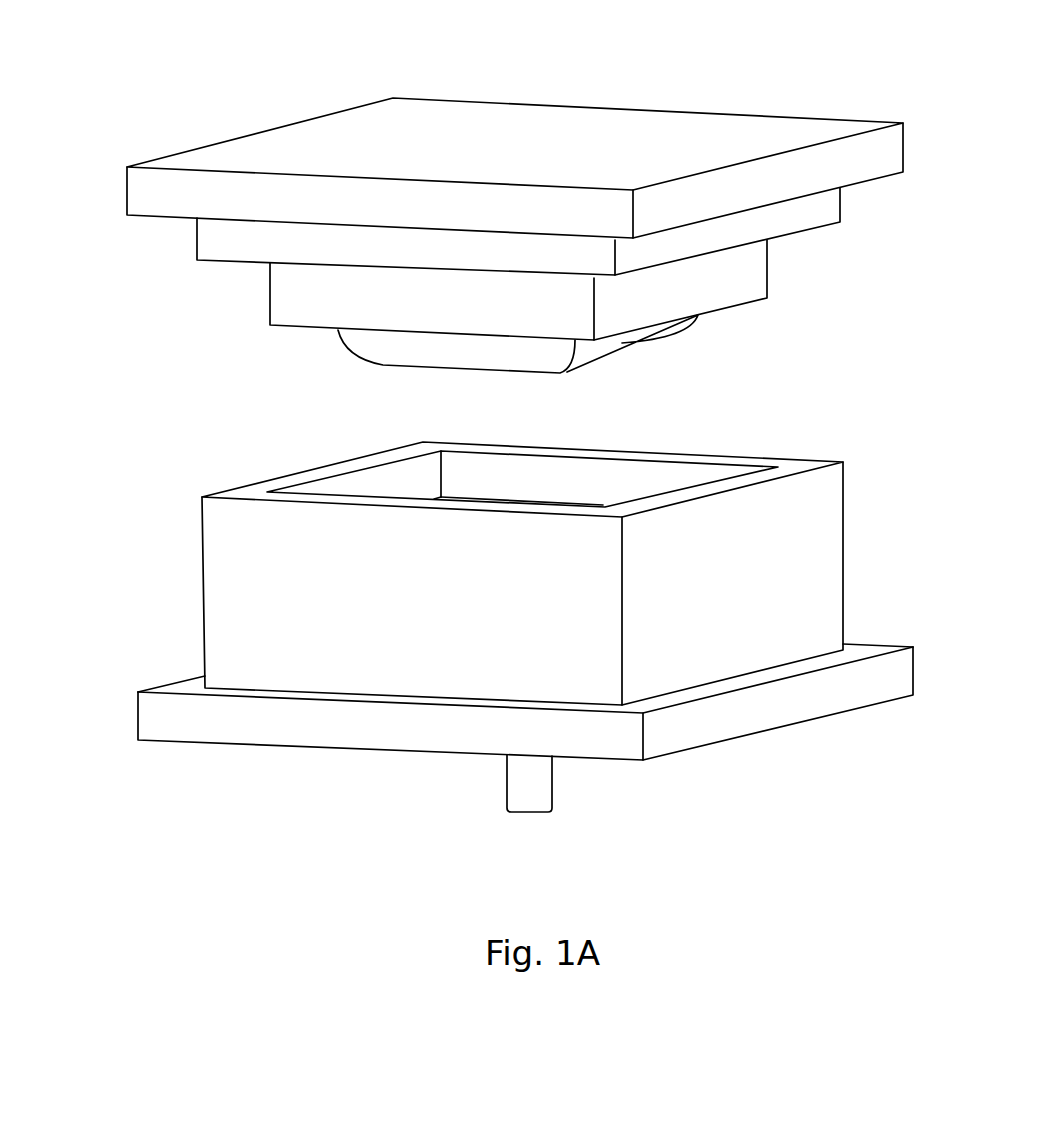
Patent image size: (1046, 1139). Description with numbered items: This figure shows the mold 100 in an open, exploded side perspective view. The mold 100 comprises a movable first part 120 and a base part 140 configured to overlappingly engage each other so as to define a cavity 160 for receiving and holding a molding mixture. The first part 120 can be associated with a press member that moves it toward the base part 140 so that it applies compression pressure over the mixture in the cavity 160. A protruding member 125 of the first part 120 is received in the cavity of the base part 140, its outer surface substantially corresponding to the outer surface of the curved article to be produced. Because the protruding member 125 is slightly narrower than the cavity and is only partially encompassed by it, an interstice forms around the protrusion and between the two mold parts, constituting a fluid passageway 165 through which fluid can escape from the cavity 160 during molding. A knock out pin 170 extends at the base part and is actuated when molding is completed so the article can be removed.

The mold 100 is at (163, 123).
The first part 120 is at (747, 117).
The protruding member 125 is at (625, 342).
The base part 140 is at (850, 510).
The cavity 160 is at (638, 480).
The fluid passageway 165 is at (580, 488).
The knock out pin 170 is at (530, 795).